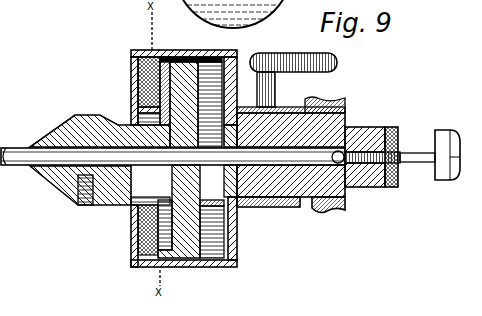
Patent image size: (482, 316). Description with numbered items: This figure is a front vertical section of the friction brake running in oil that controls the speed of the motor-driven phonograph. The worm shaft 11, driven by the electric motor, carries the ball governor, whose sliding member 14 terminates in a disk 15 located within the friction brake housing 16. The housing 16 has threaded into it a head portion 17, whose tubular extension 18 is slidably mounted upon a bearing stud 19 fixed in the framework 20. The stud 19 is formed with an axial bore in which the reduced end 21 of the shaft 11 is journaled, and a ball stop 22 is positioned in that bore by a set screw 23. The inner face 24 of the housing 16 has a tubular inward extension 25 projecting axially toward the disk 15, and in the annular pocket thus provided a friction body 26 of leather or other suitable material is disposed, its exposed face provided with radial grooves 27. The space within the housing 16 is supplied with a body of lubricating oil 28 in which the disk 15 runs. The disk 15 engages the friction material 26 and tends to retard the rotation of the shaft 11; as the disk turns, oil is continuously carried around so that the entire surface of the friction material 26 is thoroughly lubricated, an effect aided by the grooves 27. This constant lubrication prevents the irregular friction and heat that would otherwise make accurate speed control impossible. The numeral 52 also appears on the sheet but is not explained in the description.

The worm shaft 11 is at (18, 175).
The sliding member 14 is at (72, 118).
The disk 15 is at (184, 240).
The friction brake housing 16 is at (176, 52).
The head portion 17 is at (238, 225).
The tubular extension 18 is at (285, 212).
The bearing stud 19 is at (328, 124).
The framework 20 is at (350, 210).
The reduced end 21 is at (293, 155).
The ball stop 22 is at (370, 125).
The set screw 23 is at (420, 168).
The inner face 24 is at (130, 78).
The tubular inward extension 25 is at (135, 198).
The friction body 26 is at (150, 242).
The radial grooves 27 is at (156, 262).
The lubricating oil 28 is at (222, 260).
The assembly 52 is at (358, 306).